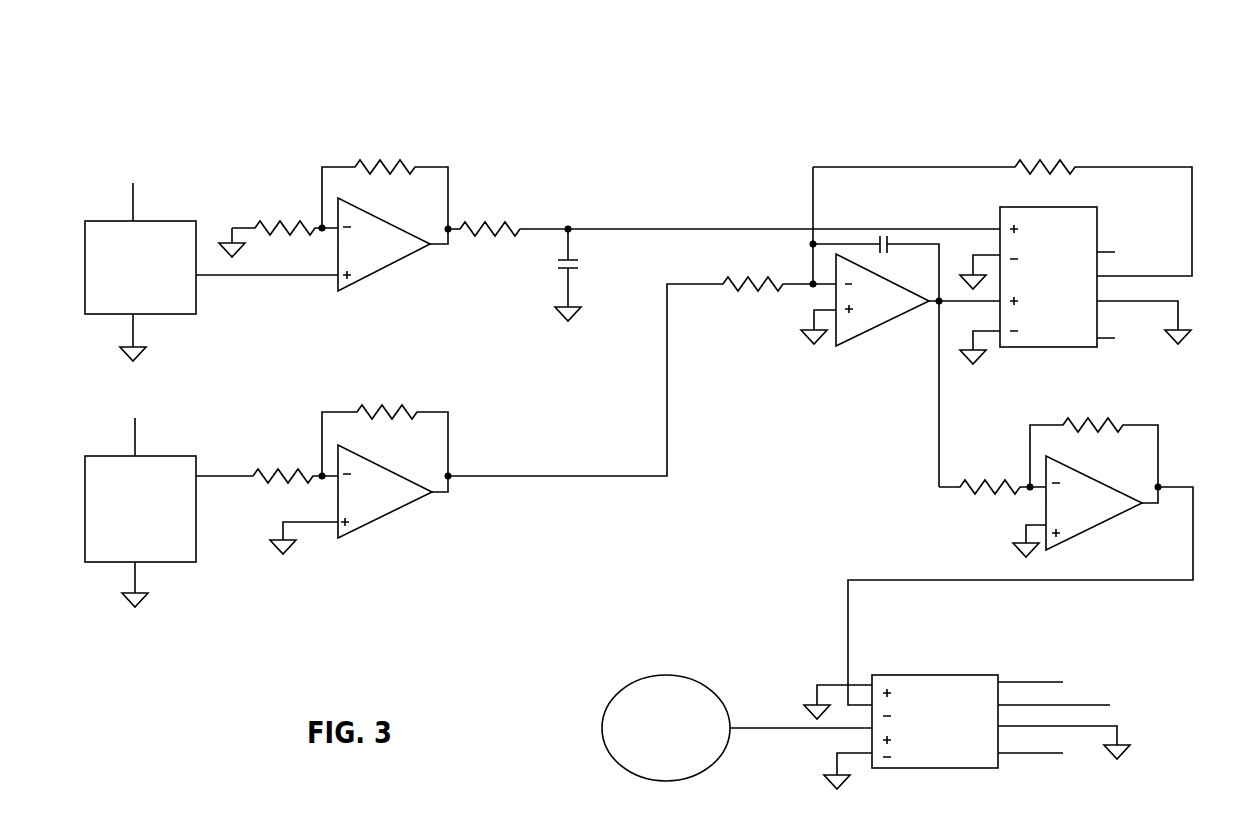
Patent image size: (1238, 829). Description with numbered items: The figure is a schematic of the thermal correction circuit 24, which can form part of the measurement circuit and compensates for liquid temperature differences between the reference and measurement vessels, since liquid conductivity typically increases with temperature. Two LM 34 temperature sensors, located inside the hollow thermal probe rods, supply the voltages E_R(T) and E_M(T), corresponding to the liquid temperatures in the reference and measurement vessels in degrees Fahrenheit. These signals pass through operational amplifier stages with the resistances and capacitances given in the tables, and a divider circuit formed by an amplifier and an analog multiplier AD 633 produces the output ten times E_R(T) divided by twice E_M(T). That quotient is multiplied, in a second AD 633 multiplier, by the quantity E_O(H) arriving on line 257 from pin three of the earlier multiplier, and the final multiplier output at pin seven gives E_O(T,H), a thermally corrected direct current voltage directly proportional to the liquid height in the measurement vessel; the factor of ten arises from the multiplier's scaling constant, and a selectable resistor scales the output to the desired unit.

The thermal correction circuit 24 is at (318, 100).
The line 257 is at (772, 728).
The LM34C temperature sensor 34 is at (140, 391).
The AD633 analog multiplier 633 is at (984, 487).